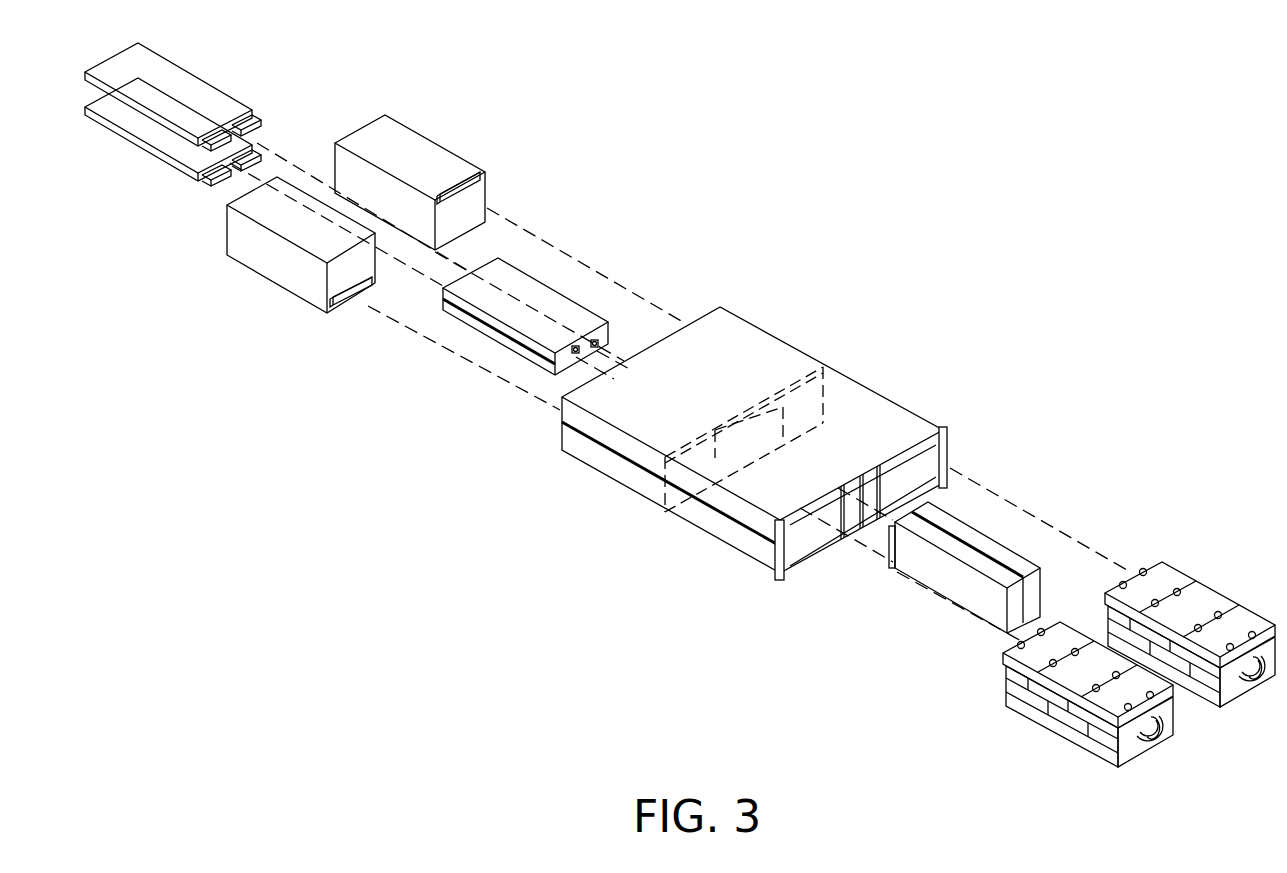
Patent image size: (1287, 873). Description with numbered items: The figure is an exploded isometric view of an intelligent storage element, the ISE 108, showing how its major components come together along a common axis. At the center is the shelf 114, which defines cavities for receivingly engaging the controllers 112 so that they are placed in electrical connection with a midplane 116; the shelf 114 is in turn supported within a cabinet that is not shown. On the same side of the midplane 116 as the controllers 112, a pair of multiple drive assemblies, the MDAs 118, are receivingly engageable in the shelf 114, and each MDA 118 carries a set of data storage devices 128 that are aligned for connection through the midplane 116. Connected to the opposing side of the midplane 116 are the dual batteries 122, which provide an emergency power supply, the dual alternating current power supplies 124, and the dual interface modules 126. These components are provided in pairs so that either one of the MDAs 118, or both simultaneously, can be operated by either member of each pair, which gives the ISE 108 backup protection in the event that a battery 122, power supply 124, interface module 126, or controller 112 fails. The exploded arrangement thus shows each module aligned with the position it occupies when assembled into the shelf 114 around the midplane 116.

The intelligent storage element (ISE) 108 is at (800, 160).
The controllers 112 is at (997, 550).
The shelf 114 is at (618, 486).
The midplane 116 is at (752, 420).
The multiple drive assemblies (MDAs) 118 is at (1176, 560).
The dual batteries 122 is at (518, 282).
The dual alternating current power supplies 124 is at (407, 156).
The dual interface modules 126 is at (195, 97).
The data storage devices 128 is at (1153, 570).